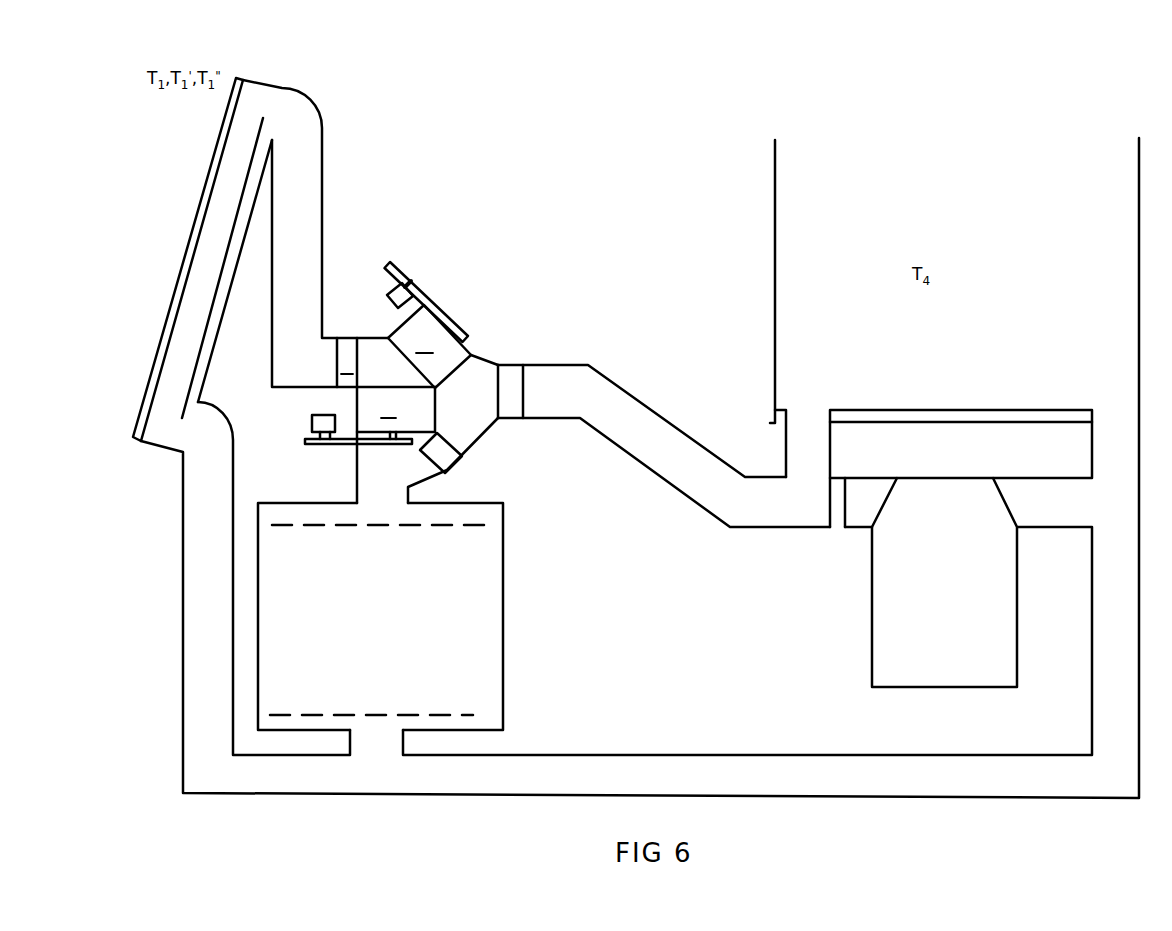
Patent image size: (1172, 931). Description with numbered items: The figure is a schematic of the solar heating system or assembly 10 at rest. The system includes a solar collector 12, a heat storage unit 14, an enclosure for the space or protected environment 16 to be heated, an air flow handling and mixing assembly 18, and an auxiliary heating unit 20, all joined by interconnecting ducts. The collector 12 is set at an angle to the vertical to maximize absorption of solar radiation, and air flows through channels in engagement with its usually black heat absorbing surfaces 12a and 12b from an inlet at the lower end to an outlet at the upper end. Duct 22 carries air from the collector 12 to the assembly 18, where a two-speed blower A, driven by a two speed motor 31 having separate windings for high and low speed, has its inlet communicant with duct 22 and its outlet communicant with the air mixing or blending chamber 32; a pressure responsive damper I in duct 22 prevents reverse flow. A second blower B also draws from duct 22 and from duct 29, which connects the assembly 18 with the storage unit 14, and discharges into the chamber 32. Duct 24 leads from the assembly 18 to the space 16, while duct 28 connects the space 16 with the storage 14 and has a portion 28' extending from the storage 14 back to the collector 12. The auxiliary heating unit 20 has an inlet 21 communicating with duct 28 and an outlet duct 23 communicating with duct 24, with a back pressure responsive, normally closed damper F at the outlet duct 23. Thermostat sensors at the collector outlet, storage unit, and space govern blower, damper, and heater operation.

The system or assembly 10 is at (578, 240).
The solar collector 12 is at (262, 98).
The heat absorbing surface 12a is at (217, 153).
The heat absorbing surface 12b is at (222, 275).
The heat storage unit 14 is at (490, 635).
The space or protected environment 16 is at (766, 270).
The air flow handling and mixing assembly 18 is at (484, 348).
The auxiliary heating unit 20 is at (862, 606).
The inlet 21 is at (1057, 512).
The duct 22 is at (308, 200).
The outlet duct 23 is at (858, 513).
The duct 24 is at (660, 422).
The duct 28 is at (645, 584).
The duct portion 28' is at (630, 468).
The duct 29 is at (373, 464).
The two speed motor 31 is at (390, 292).
The air mixing or blending chamber 32 is at (478, 378).
The damper F is at (837, 498).